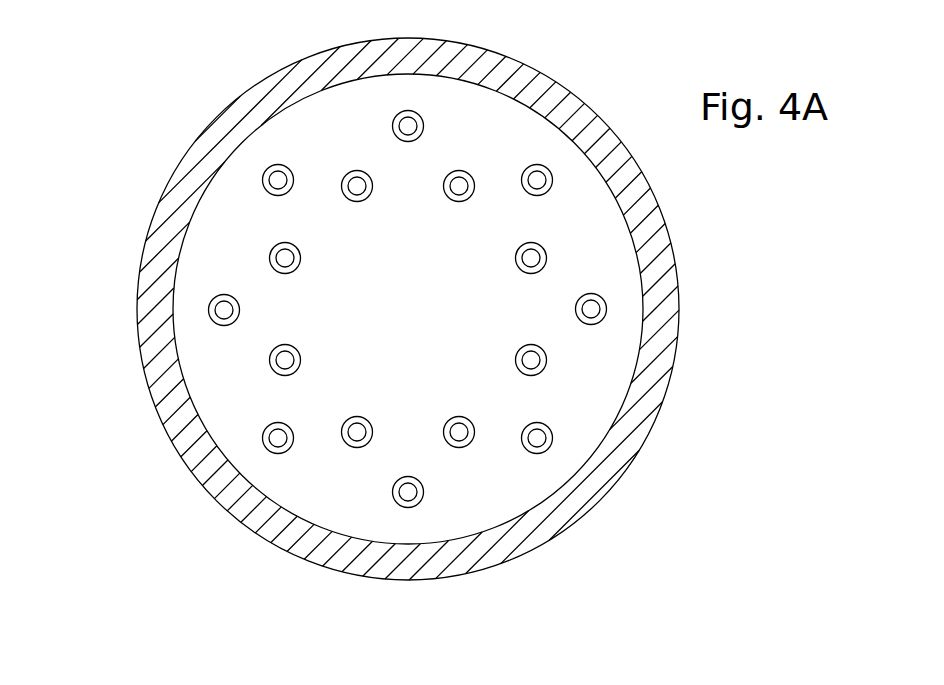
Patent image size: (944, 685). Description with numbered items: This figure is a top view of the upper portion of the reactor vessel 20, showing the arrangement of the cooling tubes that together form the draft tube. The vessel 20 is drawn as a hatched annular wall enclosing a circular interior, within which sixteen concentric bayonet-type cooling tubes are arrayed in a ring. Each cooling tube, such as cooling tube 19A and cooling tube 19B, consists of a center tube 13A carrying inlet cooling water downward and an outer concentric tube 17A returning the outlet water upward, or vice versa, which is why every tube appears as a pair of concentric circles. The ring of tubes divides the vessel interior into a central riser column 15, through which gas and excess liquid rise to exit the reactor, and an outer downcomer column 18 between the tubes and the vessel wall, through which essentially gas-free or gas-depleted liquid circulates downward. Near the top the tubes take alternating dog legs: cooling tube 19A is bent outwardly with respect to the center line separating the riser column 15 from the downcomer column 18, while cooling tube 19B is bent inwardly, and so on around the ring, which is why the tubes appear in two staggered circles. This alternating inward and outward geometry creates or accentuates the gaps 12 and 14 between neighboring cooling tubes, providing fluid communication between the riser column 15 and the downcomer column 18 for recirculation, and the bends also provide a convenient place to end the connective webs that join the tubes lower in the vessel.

The gap 12 is at (493, 443).
The gap 14 is at (553, 402).
The riser column 15 is at (385, 278).
The downcomer column 18 is at (205, 222).
The vessel 20 is at (175, 450).
The center tube 13A is at (209, 302).
The outer concentric tube 17A is at (212, 320).
The cooling tube 19A is at (600, 321).
The cooling tube 19B is at (545, 253).